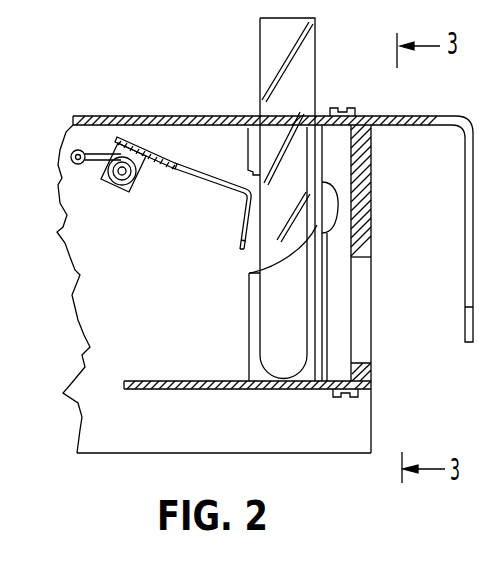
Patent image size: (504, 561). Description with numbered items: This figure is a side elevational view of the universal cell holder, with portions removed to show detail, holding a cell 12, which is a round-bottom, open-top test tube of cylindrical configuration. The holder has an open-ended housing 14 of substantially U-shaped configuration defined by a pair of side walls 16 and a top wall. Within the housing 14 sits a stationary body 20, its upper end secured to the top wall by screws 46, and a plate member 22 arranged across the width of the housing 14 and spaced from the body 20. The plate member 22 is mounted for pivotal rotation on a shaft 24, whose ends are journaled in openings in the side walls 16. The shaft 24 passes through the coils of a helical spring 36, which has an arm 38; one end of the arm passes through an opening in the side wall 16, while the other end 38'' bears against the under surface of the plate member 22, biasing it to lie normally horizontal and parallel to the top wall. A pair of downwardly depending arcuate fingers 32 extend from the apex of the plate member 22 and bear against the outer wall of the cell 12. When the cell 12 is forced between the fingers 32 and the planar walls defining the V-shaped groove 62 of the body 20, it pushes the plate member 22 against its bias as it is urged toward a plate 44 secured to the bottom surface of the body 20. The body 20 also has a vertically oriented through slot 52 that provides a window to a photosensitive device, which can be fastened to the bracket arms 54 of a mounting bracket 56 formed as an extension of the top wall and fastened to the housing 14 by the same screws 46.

The cell 12 is at (270, 45).
The housing 14 is at (156, 110).
The side wall 16 is at (83, 257).
The stationary body 20 is at (249, 316).
The plate member 22 is at (246, 172).
The shaft 24 is at (122, 180).
The fingers 32 is at (240, 250).
The spring 36 is at (140, 166).
The arm 38 is at (69, 177).
The other end of spring arm 38'' is at (212, 206).
The plate 44 is at (196, 389).
The screws 46 is at (372, 88).
The through slot 52 is at (360, 258).
The bracket arms 54 is at (466, 243).
The mounting bracket 56 is at (415, 117).
The V-shaped groove 62 is at (322, 375).